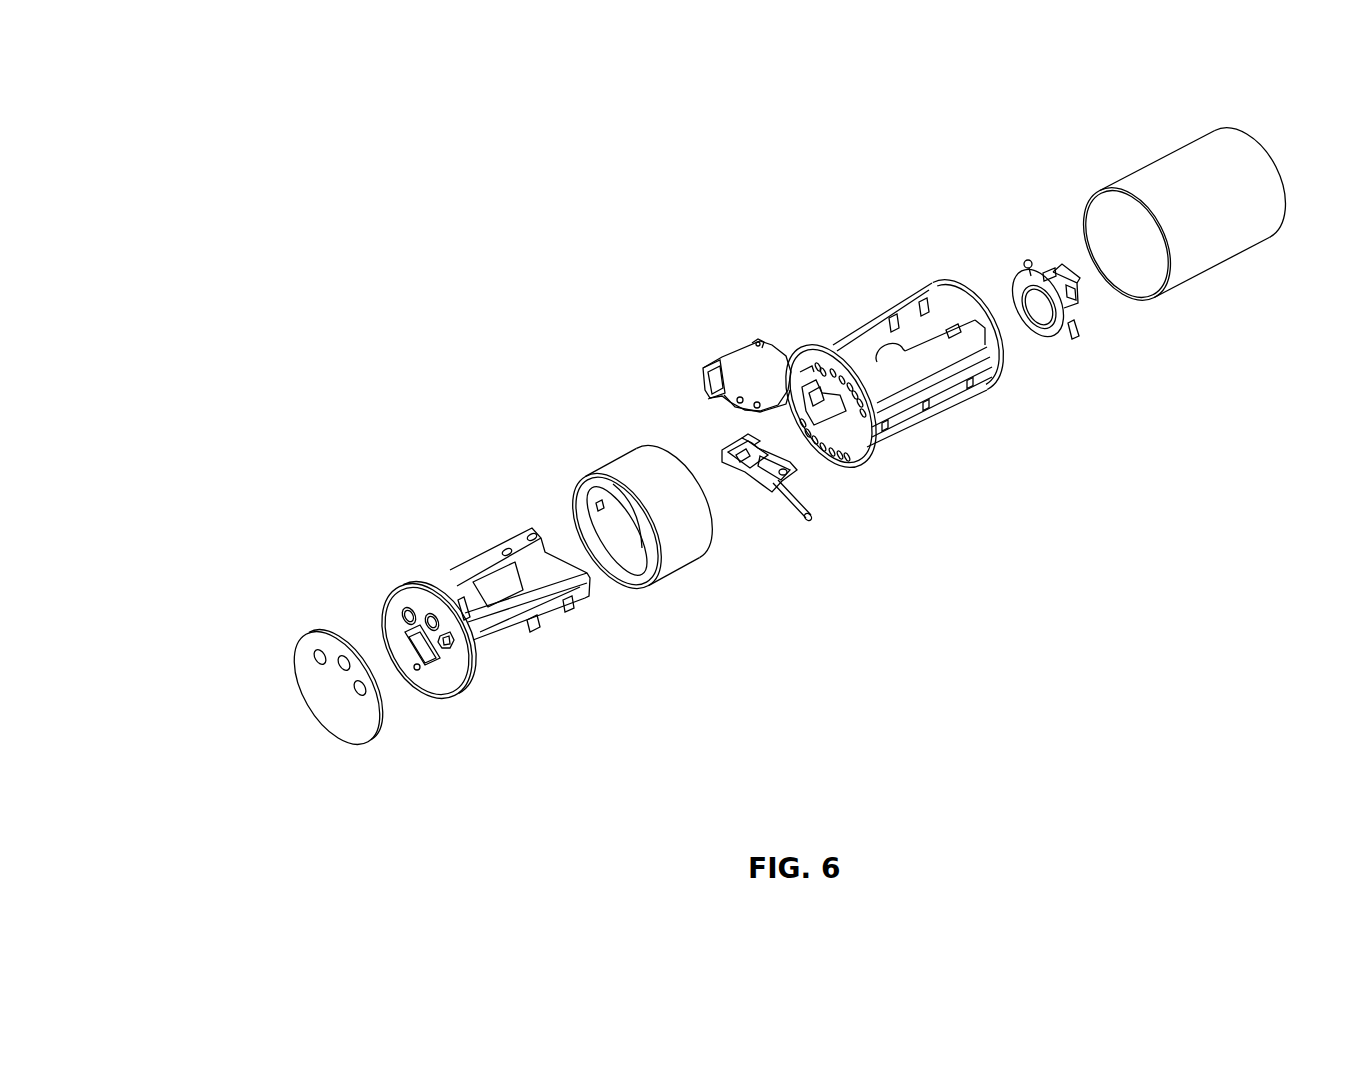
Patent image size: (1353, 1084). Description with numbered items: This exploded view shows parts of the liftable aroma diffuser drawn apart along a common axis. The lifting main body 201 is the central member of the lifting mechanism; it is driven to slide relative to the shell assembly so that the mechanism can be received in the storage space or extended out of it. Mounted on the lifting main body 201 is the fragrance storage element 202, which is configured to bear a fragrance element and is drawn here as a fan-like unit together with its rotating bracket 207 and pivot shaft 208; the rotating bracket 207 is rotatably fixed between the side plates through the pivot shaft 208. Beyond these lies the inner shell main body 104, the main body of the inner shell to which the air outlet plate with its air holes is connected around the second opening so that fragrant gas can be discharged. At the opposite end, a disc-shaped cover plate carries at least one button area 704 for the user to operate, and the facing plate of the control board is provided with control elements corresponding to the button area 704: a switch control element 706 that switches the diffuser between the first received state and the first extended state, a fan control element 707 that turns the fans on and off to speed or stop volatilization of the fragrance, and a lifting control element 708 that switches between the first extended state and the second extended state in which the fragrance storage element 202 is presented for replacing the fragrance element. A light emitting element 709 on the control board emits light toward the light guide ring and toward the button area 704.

The inner shell main body 104 is at (950, 430).
The lifting main body 201 is at (557, 638).
The fragrance storage element 202 is at (723, 433).
The rotating bracket 207 is at (785, 488).
The pivot shaft 208 is at (792, 540).
The button area 704 is at (322, 640).
The switch control element 706 is at (427, 605).
The fan control element 707 is at (398, 562).
The lifting control element 708 is at (447, 658).
The light emitting element 709 is at (402, 596).